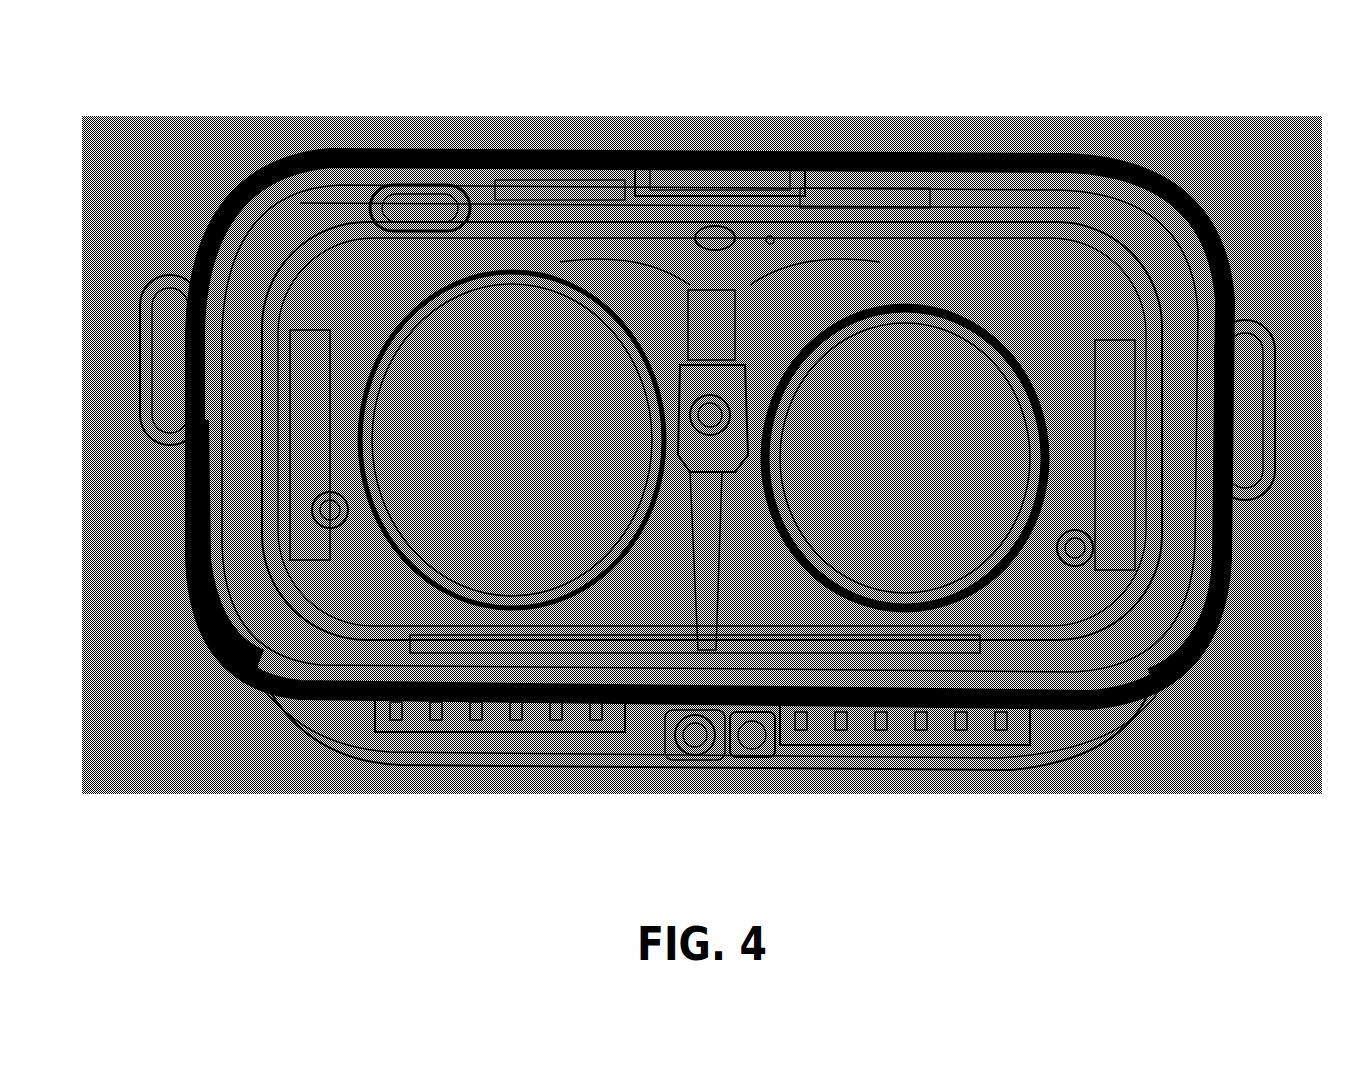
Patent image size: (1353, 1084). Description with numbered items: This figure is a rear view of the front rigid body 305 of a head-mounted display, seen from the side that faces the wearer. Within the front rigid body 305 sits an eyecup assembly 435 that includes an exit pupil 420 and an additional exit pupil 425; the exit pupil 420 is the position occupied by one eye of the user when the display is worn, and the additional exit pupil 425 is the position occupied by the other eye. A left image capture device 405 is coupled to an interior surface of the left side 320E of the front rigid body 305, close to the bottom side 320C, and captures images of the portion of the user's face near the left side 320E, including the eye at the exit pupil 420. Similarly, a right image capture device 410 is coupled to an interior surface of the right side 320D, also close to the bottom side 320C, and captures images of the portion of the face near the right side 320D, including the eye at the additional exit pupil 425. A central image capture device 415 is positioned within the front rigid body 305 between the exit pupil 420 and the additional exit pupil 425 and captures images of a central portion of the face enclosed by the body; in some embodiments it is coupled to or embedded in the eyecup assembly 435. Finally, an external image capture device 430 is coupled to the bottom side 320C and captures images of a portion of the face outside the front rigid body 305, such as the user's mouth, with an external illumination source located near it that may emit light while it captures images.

The front rigid body 305 is at (200, 150).
The bottom side 320C is at (320, 725).
The right side 320D is at (1210, 648).
The left side 320E is at (185, 568).
The left image capture device 405 is at (330, 520).
The right image capture device 410 is at (1072, 575).
The central image capture device 415 is at (778, 737).
The exit pupil 420 is at (512, 415).
The additional exit pupil 425 is at (930, 420).
The external image capture device 430 is at (693, 752).
The eyecup assembly 435 is at (655, 305).